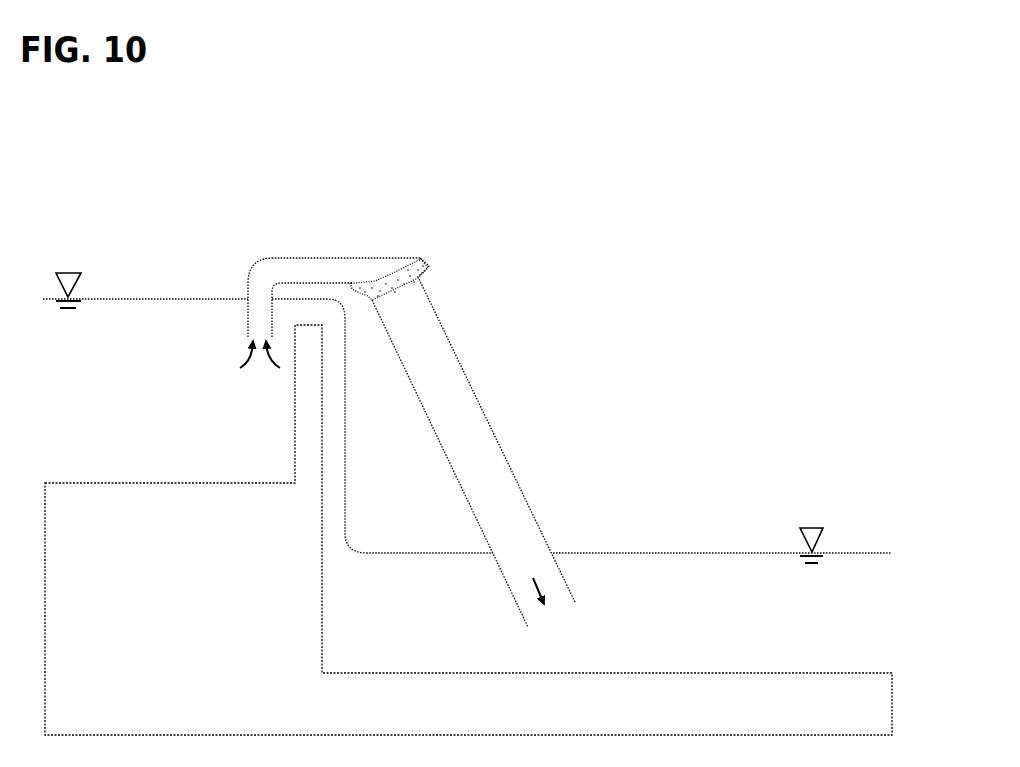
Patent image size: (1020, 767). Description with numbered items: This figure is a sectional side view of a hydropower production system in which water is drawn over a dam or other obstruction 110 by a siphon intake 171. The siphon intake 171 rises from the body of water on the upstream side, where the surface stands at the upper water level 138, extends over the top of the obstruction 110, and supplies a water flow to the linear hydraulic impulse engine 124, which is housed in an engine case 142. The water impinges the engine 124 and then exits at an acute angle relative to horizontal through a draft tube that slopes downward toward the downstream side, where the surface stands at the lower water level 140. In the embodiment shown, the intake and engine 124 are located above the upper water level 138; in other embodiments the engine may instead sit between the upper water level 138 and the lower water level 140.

The obstruction 110 is at (307, 417).
The upper water level 138 is at (145, 272).
The lower water level 140 is at (582, 431).
The siphon intake 171 is at (303, 256).
The case 142 is at (419, 253).
The linear hydraulic impulse engine 124 is at (430, 264).